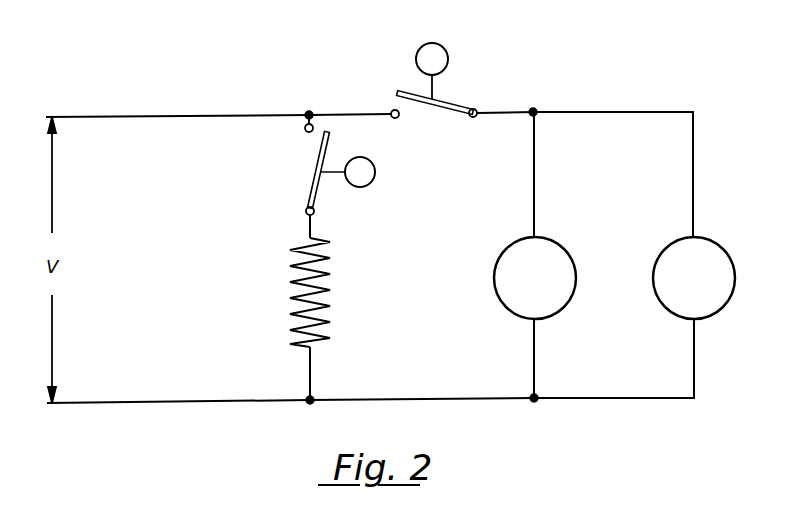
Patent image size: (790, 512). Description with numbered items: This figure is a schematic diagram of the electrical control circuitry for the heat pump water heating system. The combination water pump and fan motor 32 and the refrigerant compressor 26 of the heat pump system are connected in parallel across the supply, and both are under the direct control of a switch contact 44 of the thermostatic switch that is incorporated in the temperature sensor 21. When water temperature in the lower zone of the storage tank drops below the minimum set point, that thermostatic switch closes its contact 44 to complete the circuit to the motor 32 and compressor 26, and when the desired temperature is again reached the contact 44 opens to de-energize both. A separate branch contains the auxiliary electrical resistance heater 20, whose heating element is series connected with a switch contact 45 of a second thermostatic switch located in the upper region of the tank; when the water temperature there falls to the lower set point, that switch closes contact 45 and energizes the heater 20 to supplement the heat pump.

The electrical resistance heater 20 is at (322, 270).
The temperature sensor 21 is at (454, 71).
The refrigerant compressor 26 is at (702, 245).
The combination water pump and fan motor 32 is at (556, 248).
The switch contact 44 is at (450, 103).
The switch contact 45 is at (314, 173).